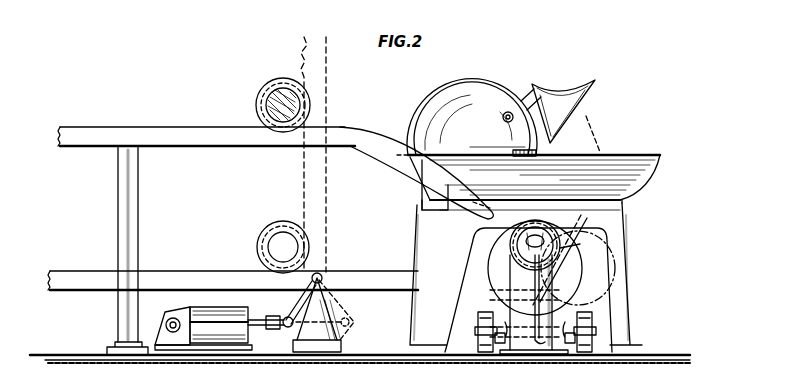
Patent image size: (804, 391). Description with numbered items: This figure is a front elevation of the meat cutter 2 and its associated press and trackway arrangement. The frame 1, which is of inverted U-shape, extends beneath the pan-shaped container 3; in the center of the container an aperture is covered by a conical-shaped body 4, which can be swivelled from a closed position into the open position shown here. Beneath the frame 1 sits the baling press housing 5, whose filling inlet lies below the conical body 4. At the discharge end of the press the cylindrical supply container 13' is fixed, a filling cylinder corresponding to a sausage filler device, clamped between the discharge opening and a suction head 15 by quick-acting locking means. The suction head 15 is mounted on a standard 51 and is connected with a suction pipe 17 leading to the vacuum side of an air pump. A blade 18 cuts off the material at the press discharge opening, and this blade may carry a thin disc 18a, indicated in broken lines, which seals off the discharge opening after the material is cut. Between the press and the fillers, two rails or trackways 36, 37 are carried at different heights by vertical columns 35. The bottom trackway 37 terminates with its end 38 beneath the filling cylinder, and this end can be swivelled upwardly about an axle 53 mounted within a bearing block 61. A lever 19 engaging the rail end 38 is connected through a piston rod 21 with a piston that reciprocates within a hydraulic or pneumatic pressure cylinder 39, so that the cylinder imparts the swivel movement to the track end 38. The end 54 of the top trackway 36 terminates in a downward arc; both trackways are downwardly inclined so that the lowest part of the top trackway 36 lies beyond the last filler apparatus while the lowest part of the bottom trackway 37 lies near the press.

The frame 1 is at (622, 283).
The meat cutter 2 is at (517, 90).
The pan-shaped container 3 is at (641, 173).
The conical-shaped body 4 is at (582, 111).
The baling press housing 5 is at (580, 247).
The upper belt roller 13' is at (267, 105).
The suction head 15 is at (512, 243).
The suction pipe 17 is at (538, 350).
The blade 18 is at (576, 235).
The thin disc 18a is at (612, 262).
The lever 19 is at (296, 310).
The piston rod 21 is at (260, 330).
The vertical columns 35 is at (139, 226).
The top trackway 36 is at (92, 132).
The bottom trackway 37 is at (81, 272).
The end of the trackway 38 is at (328, 100).
The pressure cylinder 39 is at (226, 350).
The standard 51 is at (500, 295).
The axle 53 is at (322, 276).
The end of the trackway 54 is at (374, 147).
The bearing block 61 is at (343, 348).